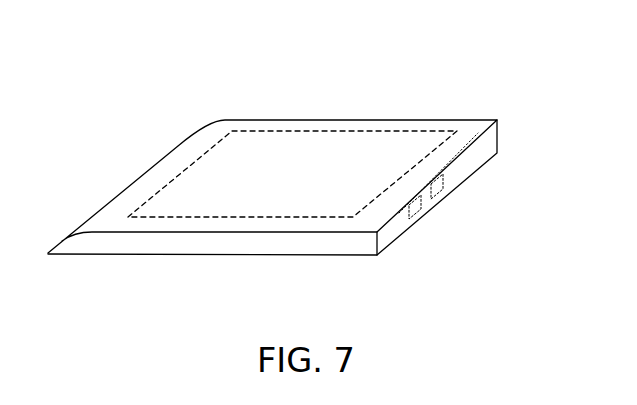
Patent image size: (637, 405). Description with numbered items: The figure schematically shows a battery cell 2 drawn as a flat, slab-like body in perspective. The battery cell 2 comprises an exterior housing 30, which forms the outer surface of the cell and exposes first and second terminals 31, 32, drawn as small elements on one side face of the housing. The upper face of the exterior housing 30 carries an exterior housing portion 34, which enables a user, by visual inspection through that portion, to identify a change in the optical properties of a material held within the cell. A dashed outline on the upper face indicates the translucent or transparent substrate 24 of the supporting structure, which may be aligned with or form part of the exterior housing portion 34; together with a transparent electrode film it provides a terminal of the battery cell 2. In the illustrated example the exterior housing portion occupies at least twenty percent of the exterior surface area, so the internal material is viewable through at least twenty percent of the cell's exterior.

The battery cell 2 is at (282, 205).
The substrate 24 is at (226, 148).
The exterior housing 30 is at (480, 121).
The first terminal 31 is at (427, 213).
The second terminal 32 is at (441, 191).
The exterior housing portion 34 is at (339, 154).